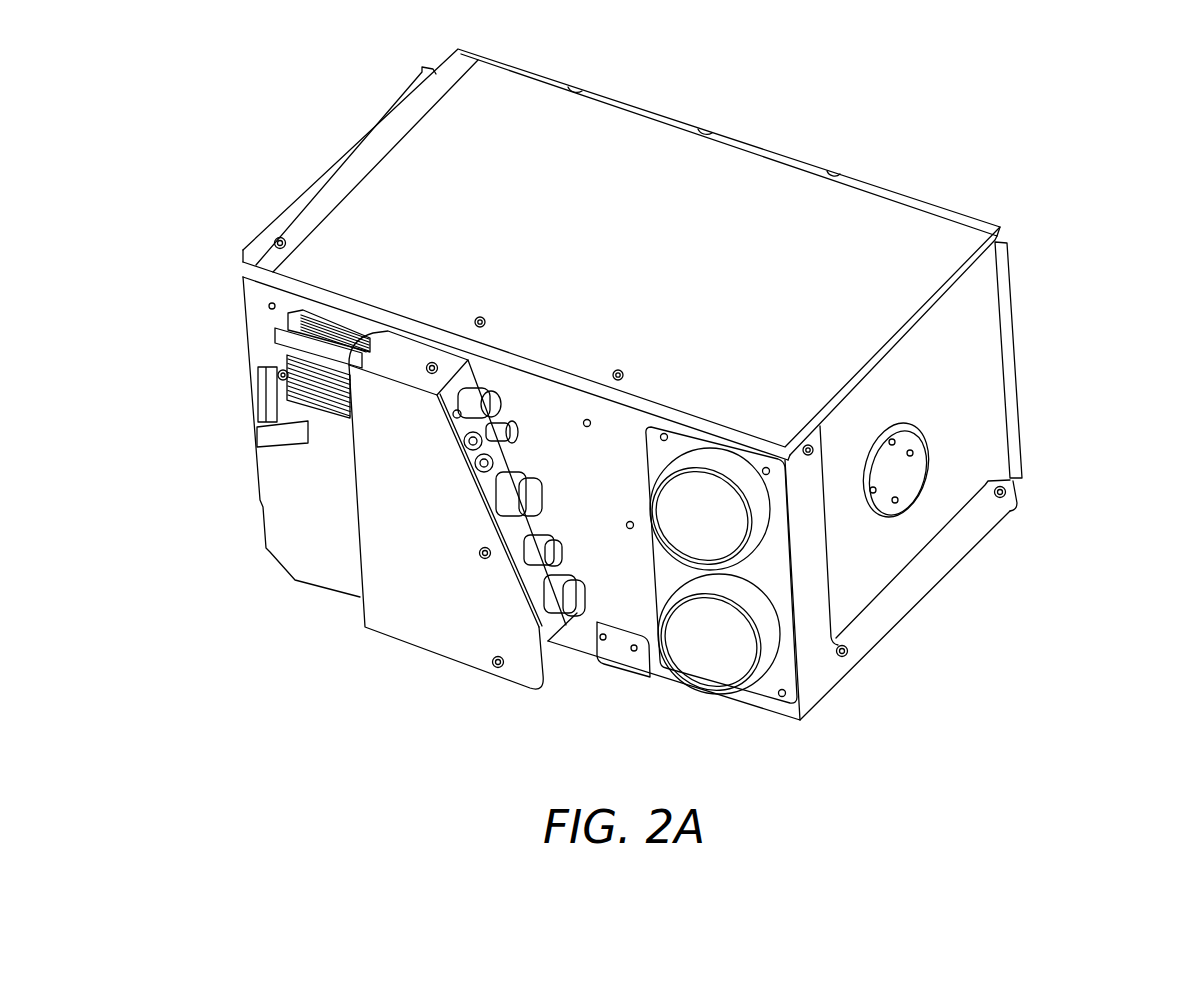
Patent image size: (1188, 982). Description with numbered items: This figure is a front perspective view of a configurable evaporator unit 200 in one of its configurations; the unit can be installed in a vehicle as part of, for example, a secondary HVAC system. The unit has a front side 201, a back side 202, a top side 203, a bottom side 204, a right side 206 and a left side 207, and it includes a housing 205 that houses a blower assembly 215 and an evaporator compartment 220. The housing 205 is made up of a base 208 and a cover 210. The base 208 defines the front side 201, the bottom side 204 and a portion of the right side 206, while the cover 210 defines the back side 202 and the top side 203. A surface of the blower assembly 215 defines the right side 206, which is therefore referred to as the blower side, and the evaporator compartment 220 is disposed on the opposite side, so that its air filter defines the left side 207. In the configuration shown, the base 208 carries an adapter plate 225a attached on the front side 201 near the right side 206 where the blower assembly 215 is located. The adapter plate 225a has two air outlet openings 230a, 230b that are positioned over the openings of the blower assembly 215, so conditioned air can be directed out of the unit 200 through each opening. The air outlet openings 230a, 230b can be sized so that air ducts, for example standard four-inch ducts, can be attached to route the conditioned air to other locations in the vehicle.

The configurable evaporator unit 200 is at (1106, 162).
The front side 201 is at (297, 552).
The back side 202 is at (944, 182).
The top side 203 is at (622, 135).
The bottom side 204 is at (898, 658).
The housing 205 is at (947, 550).
The right side 206 is at (1006, 435).
The left side 207 is at (293, 158).
The base 208 is at (260, 330).
The cover 210 is at (745, 165).
The blower assembly 215 is at (987, 370).
The evaporator compartment 220 is at (459, 154).
The adapter plate 225a is at (767, 688).
The air outlet opening 230a is at (725, 637).
The air outlet opening 230b is at (697, 508).